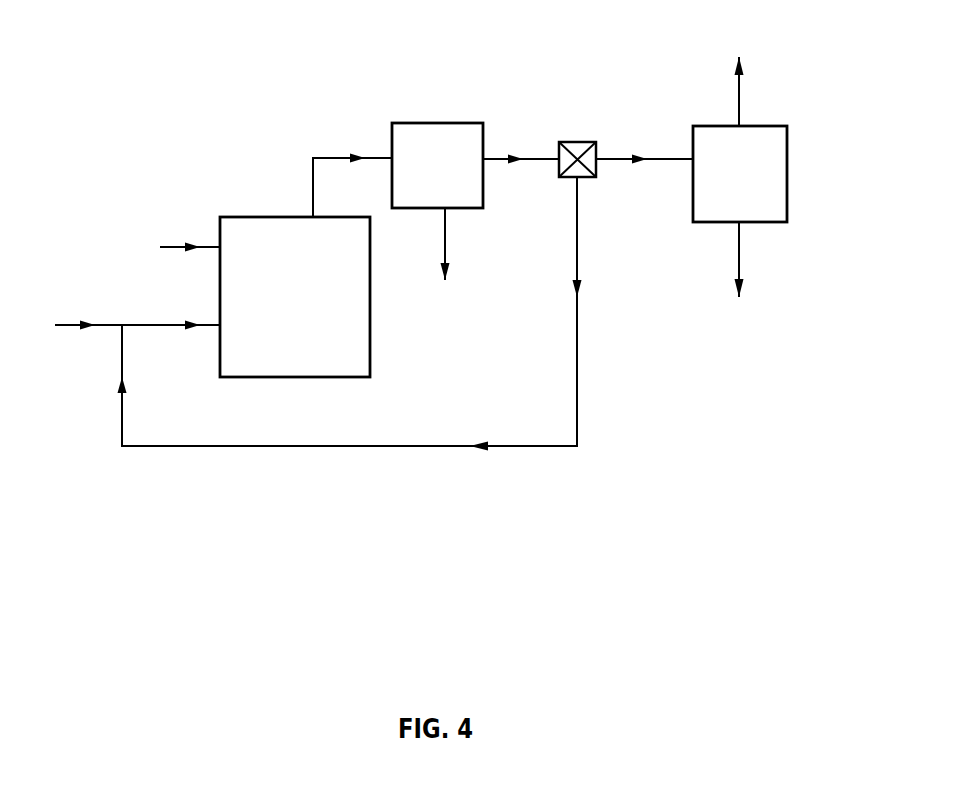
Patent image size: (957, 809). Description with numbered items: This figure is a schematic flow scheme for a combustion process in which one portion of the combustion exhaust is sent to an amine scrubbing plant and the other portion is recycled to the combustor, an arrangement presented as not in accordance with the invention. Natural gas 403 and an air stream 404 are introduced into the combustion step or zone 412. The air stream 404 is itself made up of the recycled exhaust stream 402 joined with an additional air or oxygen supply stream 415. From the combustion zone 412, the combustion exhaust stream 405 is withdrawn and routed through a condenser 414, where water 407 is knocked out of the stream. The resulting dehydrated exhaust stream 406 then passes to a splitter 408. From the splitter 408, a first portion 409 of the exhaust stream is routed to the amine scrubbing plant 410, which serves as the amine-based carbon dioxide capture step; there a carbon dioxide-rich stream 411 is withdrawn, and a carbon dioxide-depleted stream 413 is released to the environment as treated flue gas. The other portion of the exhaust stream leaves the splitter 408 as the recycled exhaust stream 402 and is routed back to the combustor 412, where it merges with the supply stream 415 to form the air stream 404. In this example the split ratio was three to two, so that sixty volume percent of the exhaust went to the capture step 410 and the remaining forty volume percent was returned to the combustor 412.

The recycled exhaust stream 402 is at (350, 326).
The natural gas 403 is at (166, 248).
The air stream 404 is at (171, 313).
The combustion exhaust stream 405 is at (352, 173).
The dehydrated exhaust stream 406 is at (521, 147).
The water 407 is at (446, 262).
The splitter 408 is at (583, 142).
The first portion of the exhaust stream 409 is at (644, 147).
The amine scrubbing plant 410 is at (787, 183).
The carbon dioxide-rich stream 411 is at (738, 276).
The combustion step or zone 412 is at (258, 217).
The carbon dioxide-depleted stream 413 is at (738, 76).
The condenser 414 is at (444, 123).
The additional air or oxygen supply stream 415 is at (77, 314).